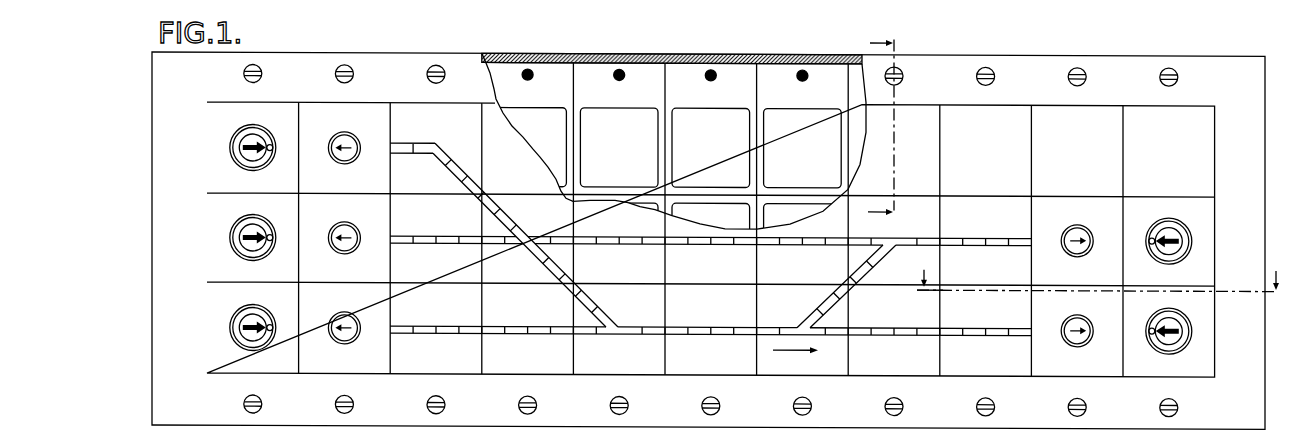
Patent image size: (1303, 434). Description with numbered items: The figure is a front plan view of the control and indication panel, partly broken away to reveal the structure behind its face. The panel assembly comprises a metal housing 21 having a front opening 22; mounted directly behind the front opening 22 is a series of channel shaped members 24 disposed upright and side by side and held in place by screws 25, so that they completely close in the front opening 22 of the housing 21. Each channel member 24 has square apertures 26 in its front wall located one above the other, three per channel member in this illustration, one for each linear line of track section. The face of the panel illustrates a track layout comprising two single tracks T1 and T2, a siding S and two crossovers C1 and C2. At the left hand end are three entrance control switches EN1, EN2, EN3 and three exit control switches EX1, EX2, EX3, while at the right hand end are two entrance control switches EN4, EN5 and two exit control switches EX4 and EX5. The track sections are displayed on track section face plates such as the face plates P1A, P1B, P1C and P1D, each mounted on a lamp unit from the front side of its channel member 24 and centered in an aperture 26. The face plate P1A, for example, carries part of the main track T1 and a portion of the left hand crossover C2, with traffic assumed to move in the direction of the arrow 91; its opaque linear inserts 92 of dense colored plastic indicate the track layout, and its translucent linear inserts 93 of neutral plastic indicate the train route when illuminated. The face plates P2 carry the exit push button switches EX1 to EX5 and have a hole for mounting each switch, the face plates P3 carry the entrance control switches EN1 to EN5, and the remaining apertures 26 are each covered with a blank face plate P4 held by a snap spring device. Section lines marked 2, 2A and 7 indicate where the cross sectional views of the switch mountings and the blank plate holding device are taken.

The metal housing 21 is at (1198, 73).
The front opening 22 is at (1217, 132).
The channel shaped member 24 is at (775, 65).
The screws 25 is at (423, 72).
The square apertures 26 is at (783, 115).
The section line 7 is at (885, 127).
The section line 2 is at (1098, 282).
The section line 2A is at (1101, 302).
The arrow 91 is at (798, 350).
The opaque linear inserts 92 is at (668, 333).
The translucent linear inserts 93 is at (740, 325).
The single track T1 is at (405, 325).
The single track T2 is at (407, 234).
The siding S is at (403, 142).
The crossover C1 is at (567, 263).
The left hand crossover C2 is at (860, 264).
The entrance control switch EN1 is at (237, 312).
The entrance control switch EN2 is at (237, 222).
The entrance control switch EN3 is at (237, 132).
The entrance control switch EN4 is at (1181, 310).
The entrance control switch EN5 is at (1151, 214).
The exit control switch EX1 is at (333, 316).
The exit control switch EX2 is at (333, 226).
The exit control switch EX3 is at (333, 136).
The exit push button switch EX4 is at (1072, 312).
The exit control switch EX5 is at (1071, 223).
The track section face plate P1A is at (818, 366).
The track section face plate P1B is at (927, 219).
The track section face plate P1C is at (633, 366).
The track section face plate P1D is at (485, 258).
The face plate P2 is at (376, 188).
The face plate P3 is at (213, 307).
The blank face plate P4 is at (1060, 117).